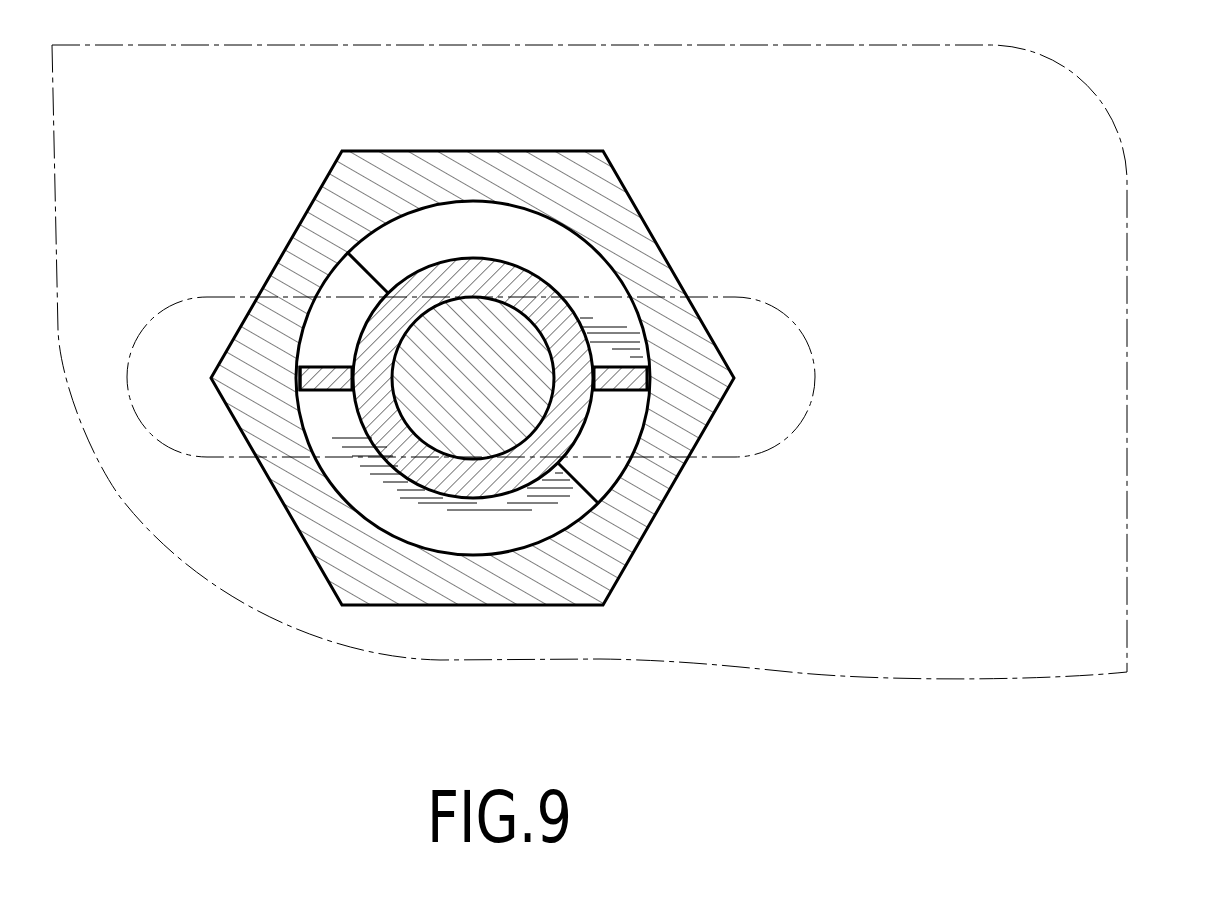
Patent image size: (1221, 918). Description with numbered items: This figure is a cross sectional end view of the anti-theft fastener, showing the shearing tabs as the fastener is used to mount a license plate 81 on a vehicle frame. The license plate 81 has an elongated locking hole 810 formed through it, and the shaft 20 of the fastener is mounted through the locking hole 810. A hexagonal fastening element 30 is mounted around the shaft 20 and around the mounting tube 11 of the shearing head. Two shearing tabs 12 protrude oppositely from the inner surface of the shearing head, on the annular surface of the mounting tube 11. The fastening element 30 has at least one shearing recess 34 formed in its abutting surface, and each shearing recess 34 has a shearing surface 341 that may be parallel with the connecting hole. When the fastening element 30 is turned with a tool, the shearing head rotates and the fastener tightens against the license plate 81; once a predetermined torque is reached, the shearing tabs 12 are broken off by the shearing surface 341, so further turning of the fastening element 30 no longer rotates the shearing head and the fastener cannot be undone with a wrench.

The license plate 81 is at (1088, 83).
The elongated locking hole 810 is at (800, 320).
The fastening element 30 is at (645, 166).
The shearing recess 34 is at (340, 287).
The mounting tube 11 is at (558, 313).
The shaft 20 is at (413, 393).
The shearing tab 12 is at (325, 372).
The shearing surface 341 is at (297, 380).